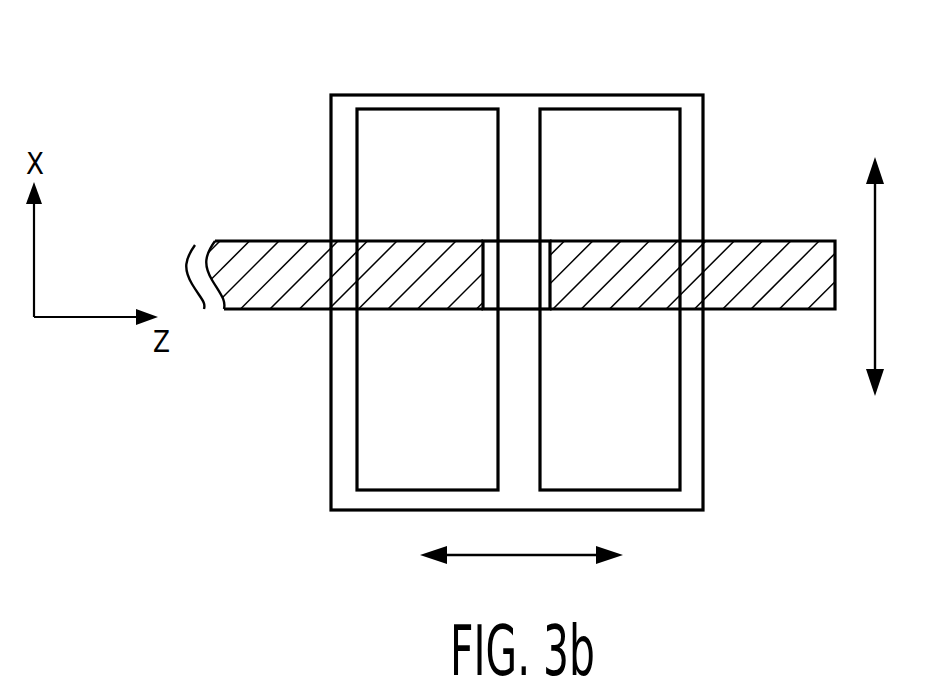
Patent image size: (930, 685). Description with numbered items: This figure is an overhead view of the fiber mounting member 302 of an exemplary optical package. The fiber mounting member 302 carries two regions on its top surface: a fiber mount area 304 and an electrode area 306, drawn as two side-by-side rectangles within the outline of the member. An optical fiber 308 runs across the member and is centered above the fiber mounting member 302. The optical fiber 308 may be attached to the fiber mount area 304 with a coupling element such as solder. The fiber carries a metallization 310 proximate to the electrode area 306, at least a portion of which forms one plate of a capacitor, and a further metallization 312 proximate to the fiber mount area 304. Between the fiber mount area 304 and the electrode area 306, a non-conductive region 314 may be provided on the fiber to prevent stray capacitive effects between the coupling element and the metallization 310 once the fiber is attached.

The fiber mounting member 302 is at (704, 127).
The fiber mount area 304 is at (425, 120).
The electrode area 306 is at (623, 120).
The optical fiber 308 is at (260, 240).
The metallization 310 is at (739, 302).
The metallization 312 is at (318, 303).
The non-conductive region 314 is at (512, 263).